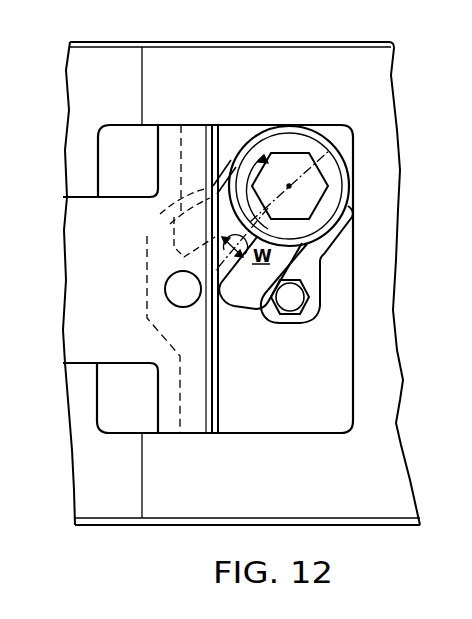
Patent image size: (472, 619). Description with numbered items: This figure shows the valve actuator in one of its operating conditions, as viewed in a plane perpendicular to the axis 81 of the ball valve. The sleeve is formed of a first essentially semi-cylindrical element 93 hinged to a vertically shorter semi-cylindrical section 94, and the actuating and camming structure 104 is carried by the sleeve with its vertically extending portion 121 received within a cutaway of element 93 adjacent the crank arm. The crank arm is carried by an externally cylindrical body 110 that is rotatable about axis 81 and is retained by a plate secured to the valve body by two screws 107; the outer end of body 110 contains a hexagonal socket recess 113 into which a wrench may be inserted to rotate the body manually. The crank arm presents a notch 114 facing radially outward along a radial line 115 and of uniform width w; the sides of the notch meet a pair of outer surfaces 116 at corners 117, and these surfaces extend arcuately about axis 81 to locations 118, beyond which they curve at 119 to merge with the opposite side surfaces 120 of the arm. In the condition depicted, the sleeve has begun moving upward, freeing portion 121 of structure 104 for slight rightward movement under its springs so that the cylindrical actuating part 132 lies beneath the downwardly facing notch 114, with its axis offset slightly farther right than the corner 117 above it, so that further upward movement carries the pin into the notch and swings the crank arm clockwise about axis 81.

The axis 81 is at (290, 188).
The first semi-cylindrical element 93 is at (250, 62).
The semi-cylindrical section 94 is at (97, 67).
The actuating and camming structure 104 is at (78, 347).
The screws 107 is at (293, 297).
The externally cylindrical body 110 is at (273, 140).
The hexagonal socket recess 113 is at (290, 163).
The notch 114 is at (218, 279).
The radial line 115 is at (260, 223).
The outer surfaces 116 is at (175, 245).
The corners 117 is at (148, 270).
The locations 118 is at (170, 232).
The curved portions 119 is at (180, 208).
The side surfaces 120 is at (203, 193).
The vertically extending portion 121 is at (192, 137).
The actuating part 132 is at (175, 295).